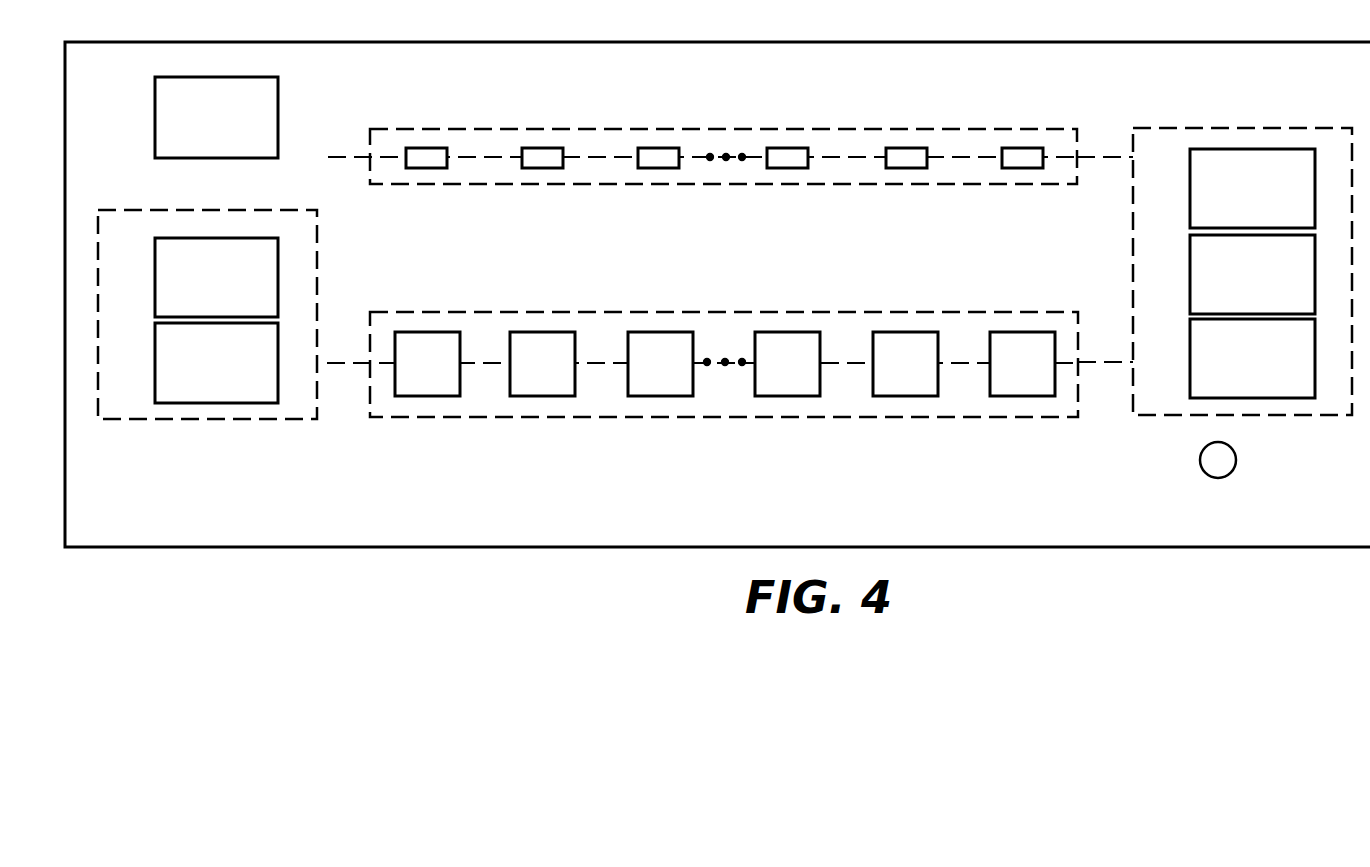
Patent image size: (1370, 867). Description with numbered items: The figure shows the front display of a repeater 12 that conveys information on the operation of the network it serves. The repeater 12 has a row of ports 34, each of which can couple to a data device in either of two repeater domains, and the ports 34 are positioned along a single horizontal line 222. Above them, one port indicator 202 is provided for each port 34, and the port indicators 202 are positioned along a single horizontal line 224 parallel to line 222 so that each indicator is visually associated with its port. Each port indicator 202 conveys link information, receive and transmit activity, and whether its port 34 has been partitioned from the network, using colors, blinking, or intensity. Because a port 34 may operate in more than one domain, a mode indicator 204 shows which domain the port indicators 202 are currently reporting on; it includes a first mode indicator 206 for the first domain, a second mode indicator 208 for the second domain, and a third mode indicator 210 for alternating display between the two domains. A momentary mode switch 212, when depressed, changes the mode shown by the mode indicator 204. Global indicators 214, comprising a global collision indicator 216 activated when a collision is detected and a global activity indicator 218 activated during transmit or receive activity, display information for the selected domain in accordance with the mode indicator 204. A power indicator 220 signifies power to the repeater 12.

The repeater 12 is at (337, 547).
The port 34 is at (837, 417).
The port indicator 202 is at (875, 130).
The mode indicator 204 is at (1242, 238).
The first mode indicator 206 is at (1190, 193).
The second mode indicator 208 is at (1190, 273).
The third mode indicator 210 is at (1190, 357).
The mode switch 212 is at (1200, 470).
The global indicators 214 is at (207, 374).
The global collision indicator 216 is at (155, 277).
The global activity indicator 218 is at (155, 358).
The power indicator 220 is at (155, 118).
The horizontal line 222 is at (1108, 363).
The horizontal line 224 is at (1110, 155).